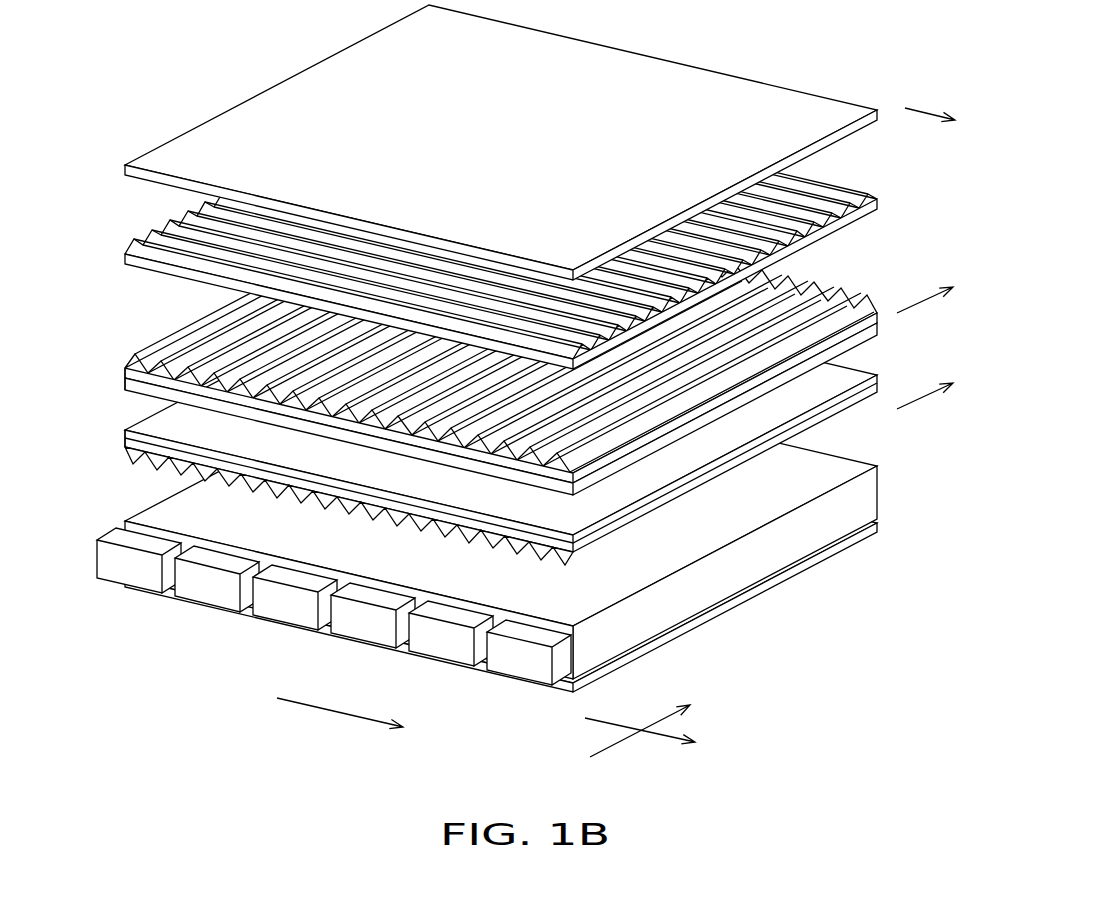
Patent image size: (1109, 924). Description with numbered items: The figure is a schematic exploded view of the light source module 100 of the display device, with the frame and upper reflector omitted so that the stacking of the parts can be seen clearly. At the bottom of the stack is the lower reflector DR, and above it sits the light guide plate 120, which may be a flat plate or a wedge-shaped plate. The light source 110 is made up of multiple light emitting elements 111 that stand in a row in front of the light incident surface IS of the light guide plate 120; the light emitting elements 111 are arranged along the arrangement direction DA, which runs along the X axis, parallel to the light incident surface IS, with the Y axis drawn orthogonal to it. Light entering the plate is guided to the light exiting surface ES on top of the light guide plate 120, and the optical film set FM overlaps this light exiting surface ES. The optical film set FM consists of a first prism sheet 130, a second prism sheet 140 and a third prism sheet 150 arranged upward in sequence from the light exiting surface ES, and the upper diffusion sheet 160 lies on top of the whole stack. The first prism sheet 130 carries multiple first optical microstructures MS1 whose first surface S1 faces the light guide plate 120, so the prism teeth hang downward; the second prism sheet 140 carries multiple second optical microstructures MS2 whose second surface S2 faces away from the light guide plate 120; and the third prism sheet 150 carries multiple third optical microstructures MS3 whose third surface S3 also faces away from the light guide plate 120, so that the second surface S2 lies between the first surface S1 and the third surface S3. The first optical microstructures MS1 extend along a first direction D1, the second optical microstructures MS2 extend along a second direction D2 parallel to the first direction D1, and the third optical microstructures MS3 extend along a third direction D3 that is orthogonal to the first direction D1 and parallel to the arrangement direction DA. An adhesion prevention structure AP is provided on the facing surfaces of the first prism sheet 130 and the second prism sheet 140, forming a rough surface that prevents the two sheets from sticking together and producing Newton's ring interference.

The light source module 100 is at (526, 383).
The light source 110 is at (329, 606).
The light emitting element 111 is at (287, 602).
The light guide plate 120 is at (533, 564).
The first prism sheet 130 is at (505, 333).
The second prism sheet 140 is at (504, 266).
The third prism sheet 150 is at (503, 227).
The upper diffusion sheet 160 is at (818, 109).
The lower reflector DR is at (767, 583).
The light exiting surface ES is at (830, 460).
The light incident surface IS is at (565, 683).
The first surface S1 is at (591, 566).
The second surface S2 is at (813, 286).
The third surface S3 is at (799, 193).
The first optical microstructures MS1 is at (134, 478).
The second optical microstructures MS2 is at (183, 312).
The third optical microstructures MS3 is at (159, 209).
The adhesion prevention structure AP is at (125, 434).
The optical film set FM is at (505, 333).
The first direction D1 is at (941, 389).
The second direction D2 is at (941, 289).
The third direction D3 is at (945, 126).
The X-axis X is at (651, 742).
The Y-axis Y is at (646, 719).
The arrangement direction DA is at (340, 703).